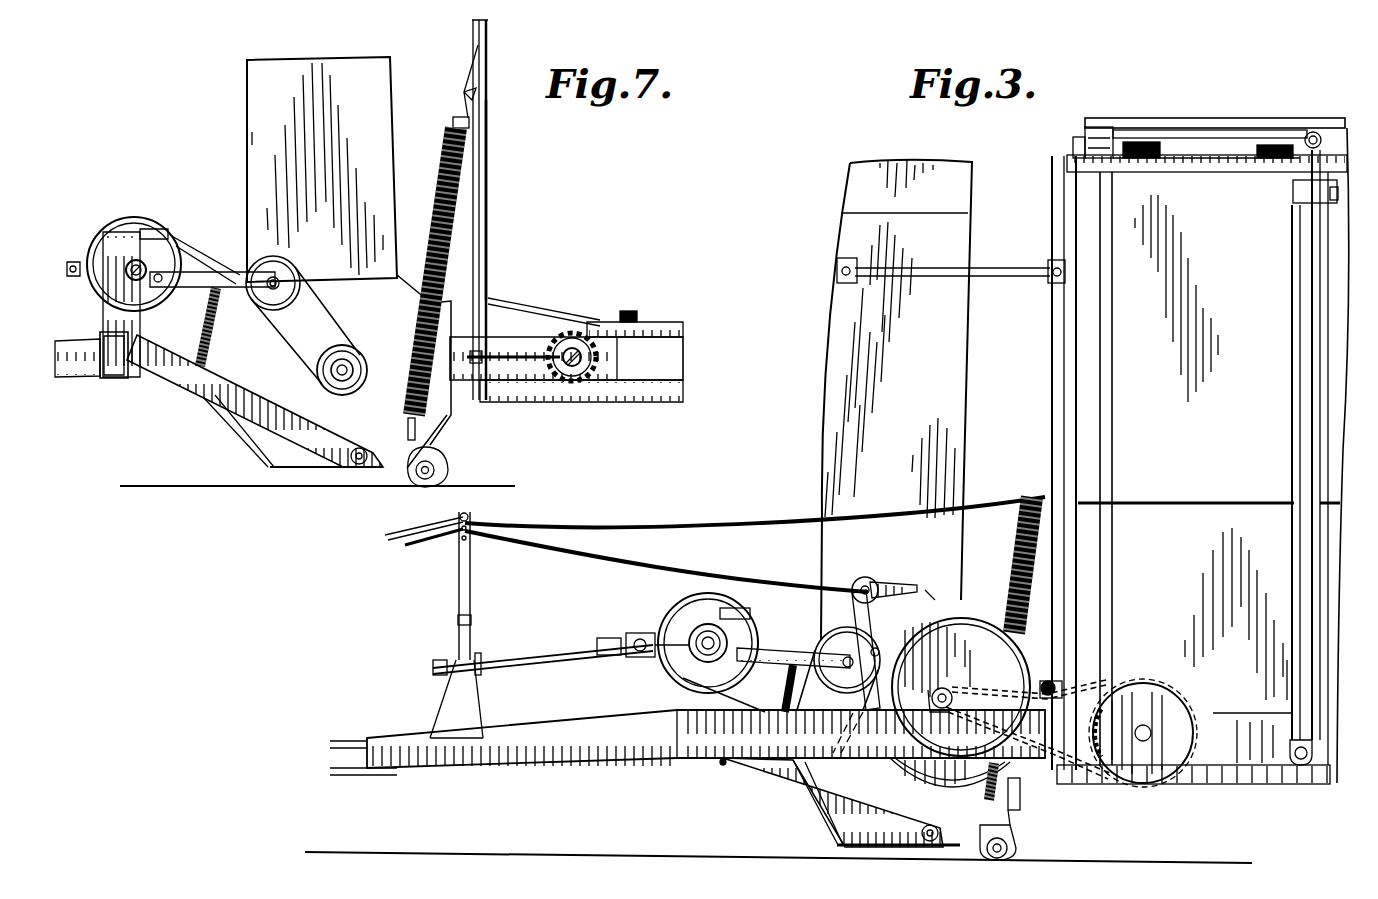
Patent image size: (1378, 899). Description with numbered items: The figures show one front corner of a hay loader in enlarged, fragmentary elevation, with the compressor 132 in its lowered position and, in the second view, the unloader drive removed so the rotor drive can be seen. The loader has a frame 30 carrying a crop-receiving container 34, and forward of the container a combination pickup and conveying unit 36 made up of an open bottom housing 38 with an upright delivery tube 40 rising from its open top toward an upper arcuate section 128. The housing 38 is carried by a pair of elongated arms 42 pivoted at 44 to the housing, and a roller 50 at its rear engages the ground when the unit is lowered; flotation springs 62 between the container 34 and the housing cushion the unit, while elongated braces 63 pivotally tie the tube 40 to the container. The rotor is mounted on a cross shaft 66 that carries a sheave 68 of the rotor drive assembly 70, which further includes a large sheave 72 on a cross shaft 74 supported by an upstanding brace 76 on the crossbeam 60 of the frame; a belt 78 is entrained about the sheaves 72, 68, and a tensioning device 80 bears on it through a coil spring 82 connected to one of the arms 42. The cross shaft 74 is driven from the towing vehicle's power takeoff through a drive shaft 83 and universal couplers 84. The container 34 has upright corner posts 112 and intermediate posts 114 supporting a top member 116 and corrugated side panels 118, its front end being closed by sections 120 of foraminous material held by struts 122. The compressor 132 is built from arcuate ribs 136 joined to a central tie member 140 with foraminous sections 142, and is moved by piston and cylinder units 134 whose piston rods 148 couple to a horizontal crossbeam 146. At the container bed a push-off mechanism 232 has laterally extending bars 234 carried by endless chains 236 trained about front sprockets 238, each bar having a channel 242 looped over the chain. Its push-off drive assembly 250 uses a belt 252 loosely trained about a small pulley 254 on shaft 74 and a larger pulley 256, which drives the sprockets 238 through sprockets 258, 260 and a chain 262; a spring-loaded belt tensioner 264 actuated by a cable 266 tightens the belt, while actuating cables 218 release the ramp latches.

In FIG. 7, the frame 30 is at (98, 375).
In FIG. 3, the frame 30 is at (683, 765).
In FIG. 7, the crop-receiving container 34 is at (471, 40).
In FIG. 3, the crop-receiving container 34 is at (1048, 202).
In FIG. 7, the combination pickup and conveying unit 36 is at (236, 233).
In FIG. 3, the combination pickup and conveying unit 36 is at (802, 518).
In FIG. 7, the open bottom housing 38 is at (253, 450).
In FIG. 3, the open bottom housing 38 is at (835, 826).
In FIG. 7, the upright delivery tube 40 is at (248, 67).
In FIG. 3, the upright delivery tube 40 is at (823, 285).
In FIG. 7, the elongated arms 42 is at (212, 400).
In FIG. 3, the elongated arms 42 is at (775, 772).
In FIG. 7, the pivot 44 is at (356, 465).
In FIG. 3, the pivot 44 is at (928, 843).
In FIG. 7, the roller 50 is at (443, 470).
In FIG. 3, the roller 50 is at (1012, 850).
In FIG. 7, the crossbeam 60 is at (118, 383).
In FIG. 7, the flotation springs 62 is at (446, 182).
In FIG. 3, the flotation springs 62 is at (1025, 545).
In FIG. 3, the elongated braces 63 is at (992, 276).
In FIG. 7, the cross shaft 66 is at (345, 390).
In FIG. 7, the sheave 68 is at (357, 362).
In FIG. 7, the drive assembly 70 is at (103, 228).
In FIG. 3, the drive assembly 70 is at (663, 632).
In FIG. 7, the large sheave 72 is at (124, 218).
In FIG. 3, the large sheave 72 is at (706, 592).
In FIG. 7, the cross shaft 74 is at (125, 270).
In FIG. 3, the cross shaft 74 is at (705, 640).
In FIG. 7, the upstanding brace 76 is at (153, 230).
In FIG. 3, the upstanding brace 76 is at (742, 612).
In FIG. 7, the belt 78 is at (303, 333).
In FIG. 3, the belt 78 is at (838, 702).
In FIG. 7, the tensioning device 80 is at (222, 276).
In FIG. 3, the tensioning device 80 is at (812, 656).
In FIG. 7, the coil spring 82 is at (222, 327).
In FIG. 3, the drive shaft 83 is at (522, 655).
In FIG. 7, the universal couplers 84 is at (70, 262).
In FIG. 3, the universal couplers 84 is at (612, 658).
In FIG. 3, the upright corner posts 112 is at (1095, 281).
In FIG. 3, the intermediate posts 114 is at (1340, 435).
In FIG. 3, the top member 116 is at (1232, 165).
In FIG. 3, the corrugated side panels 118 is at (1130, 350).
In FIG. 7, the sections of foraminous material 120 is at (488, 192).
In FIG. 7, the struts 122 is at (478, 96).
In FIG. 3, the upper arcuate section 128 is at (870, 163).
In FIG. 3, the compressor 132 is at (1075, 140).
In FIG. 3, the piston and cylinder units 134 is at (1294, 359).
In FIG. 3, the arcuate ribs 136 is at (1097, 133).
In FIG. 3, the central tie member 140 is at (1158, 122).
In FIG. 3, the foraminous sections 142 is at (1212, 158).
In FIG. 3, the horizontal crossbeam 146 is at (1315, 131).
In FIG. 3, the piston rods 148 is at (1302, 165).
In FIG. 3, the actuating cables 218 is at (600, 528).
In FIG. 7, the push-off mechanism 232 is at (627, 313).
In FIG. 7, the laterally extending bars 234 is at (640, 320).
In FIG. 7, the endless chains 236 is at (685, 330).
In FIG. 7, the front sprockets 238 is at (580, 383).
In FIG. 7, the channel 242 is at (605, 320).
In FIG. 3, the push-off drive assembly 250 is at (924, 593).
In FIG. 3, the belt 252 is at (855, 590).
In FIG. 3, the small pulley 254 is at (685, 645).
In FIG. 3, the larger pulley 256 is at (985, 620).
In FIG. 3, the sprocket 258 is at (948, 698).
In FIG. 3, the sprocket 260 is at (1172, 705).
In FIG. 3, the chain 262 is at (1160, 784).
In FIG. 3, the spring-loaded belt tensioner 264 is at (875, 590).
In FIG. 3, the cable 266 is at (648, 555).